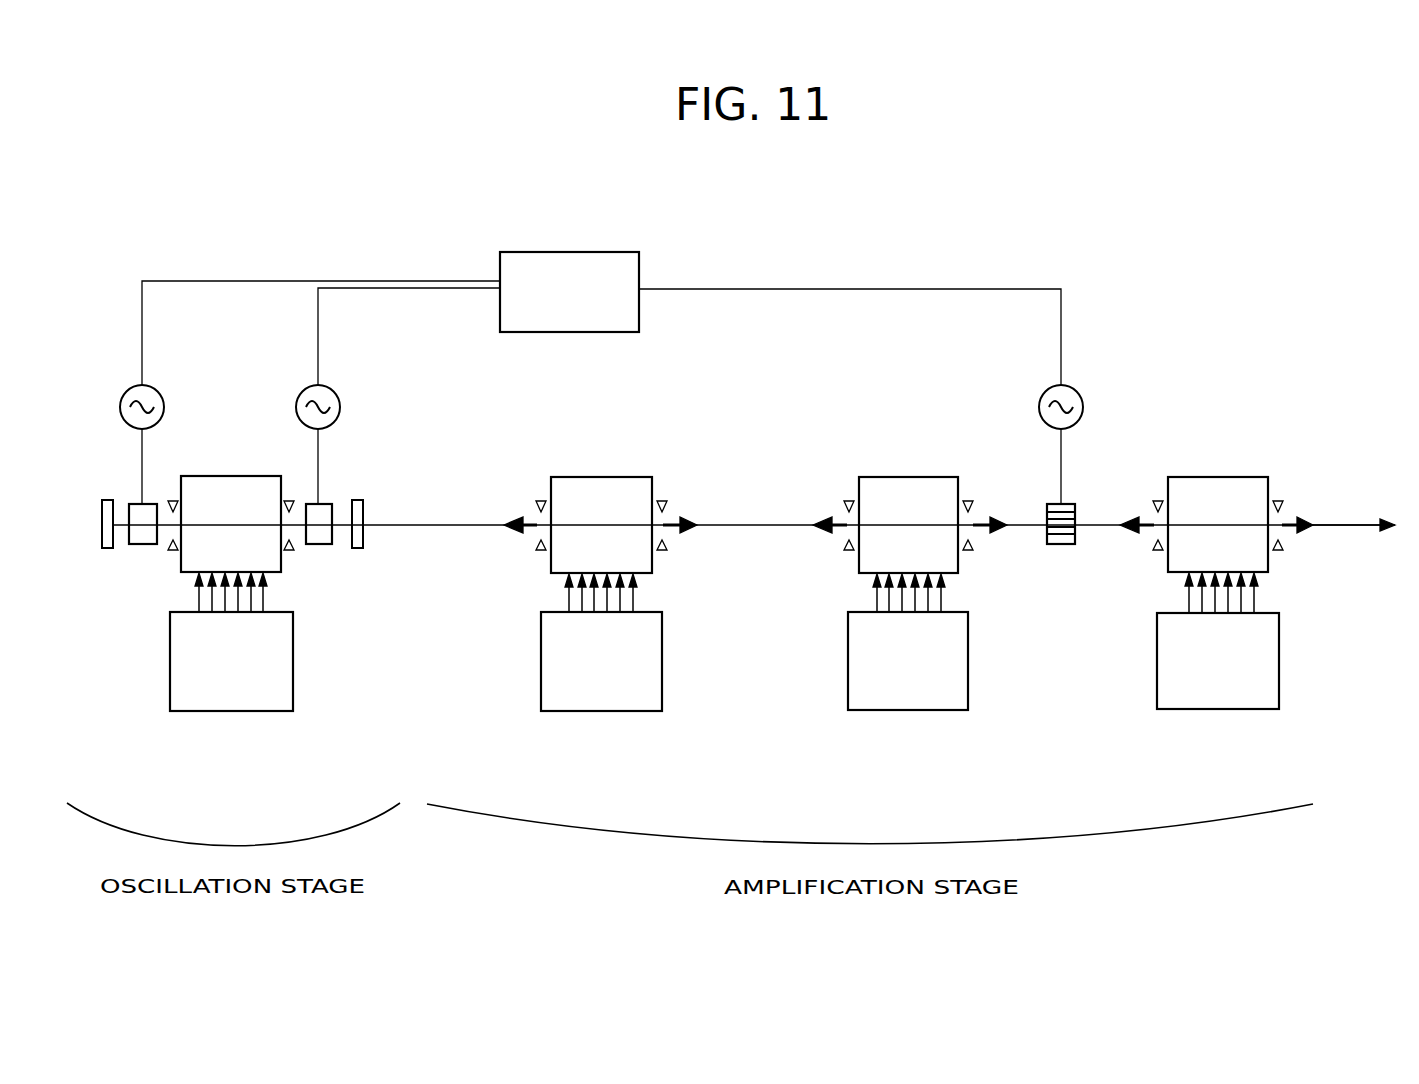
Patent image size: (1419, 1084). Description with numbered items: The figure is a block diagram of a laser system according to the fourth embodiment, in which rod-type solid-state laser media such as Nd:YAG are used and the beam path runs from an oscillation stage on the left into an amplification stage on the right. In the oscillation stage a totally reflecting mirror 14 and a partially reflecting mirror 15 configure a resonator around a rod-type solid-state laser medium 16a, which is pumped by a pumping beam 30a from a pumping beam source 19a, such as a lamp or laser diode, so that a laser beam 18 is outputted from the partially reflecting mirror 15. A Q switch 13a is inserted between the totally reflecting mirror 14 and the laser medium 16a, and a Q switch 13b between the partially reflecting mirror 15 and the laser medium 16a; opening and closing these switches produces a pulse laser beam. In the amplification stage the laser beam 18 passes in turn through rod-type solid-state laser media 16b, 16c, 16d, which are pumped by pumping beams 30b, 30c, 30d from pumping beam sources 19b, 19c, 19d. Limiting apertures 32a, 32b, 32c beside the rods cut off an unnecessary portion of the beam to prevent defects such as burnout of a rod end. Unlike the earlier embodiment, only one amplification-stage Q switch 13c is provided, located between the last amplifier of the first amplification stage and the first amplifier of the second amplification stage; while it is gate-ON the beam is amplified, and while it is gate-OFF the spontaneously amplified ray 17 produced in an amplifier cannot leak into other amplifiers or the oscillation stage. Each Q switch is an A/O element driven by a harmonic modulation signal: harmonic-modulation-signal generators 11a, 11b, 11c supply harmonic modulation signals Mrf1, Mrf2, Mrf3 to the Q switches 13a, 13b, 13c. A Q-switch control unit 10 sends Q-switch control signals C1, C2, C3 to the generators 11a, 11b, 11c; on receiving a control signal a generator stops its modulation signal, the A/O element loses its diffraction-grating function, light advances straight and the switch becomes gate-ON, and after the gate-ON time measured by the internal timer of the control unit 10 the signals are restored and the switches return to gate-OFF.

The Q-switch control unit 10 is at (572, 252).
The harmonic-modulation-signal generator 11a is at (162, 388).
The harmonic-modulation-signal generator 11b is at (333, 388).
The harmonic-modulation-signal generator 11c is at (1071, 388).
The Q switch 13a is at (141, 544).
The Q switch 13b is at (320, 544).
The Q switch 13c is at (1068, 548).
The totally reflecting mirror 14 is at (108, 548).
The partially reflecting mirror 15 is at (355, 500).
The rod-type solid-state laser medium 16a is at (228, 476).
The rod-type solid-state laser medium 16b is at (598, 477).
The rod-type solid-state laser medium 16c is at (905, 477).
The rod-type solid-state laser medium 16d is at (1218, 477).
The spontaneously amplified ray 17 is at (518, 510).
The laser beam 18 is at (1358, 522).
The pumping beam source 19a is at (170, 688).
The pumping beam source 19b is at (541, 688).
The pumping beam source 19c is at (848, 688).
The pumping beam source 19d is at (1157, 672).
The pumping beam 30a is at (262, 600).
The pumping beam 30b is at (633, 600).
The pumping beam 30c is at (941, 600).
The pumping beam 30d is at (1254, 600).
The limiting aperture 32a is at (170, 502).
The limiting aperture 32b is at (660, 502).
The limiting aperture 32c is at (847, 502).
The Q-switch control signal C1 is at (305, 333).
The Q-switch control signal C2 is at (389, 336).
The Q-switch control signal C3 is at (868, 336).
The harmonic modulation signal Mrf1 is at (108, 470).
The harmonic modulation signal Mrf2 is at (272, 470).
The harmonic modulation signal Mrf3 is at (1017, 470).